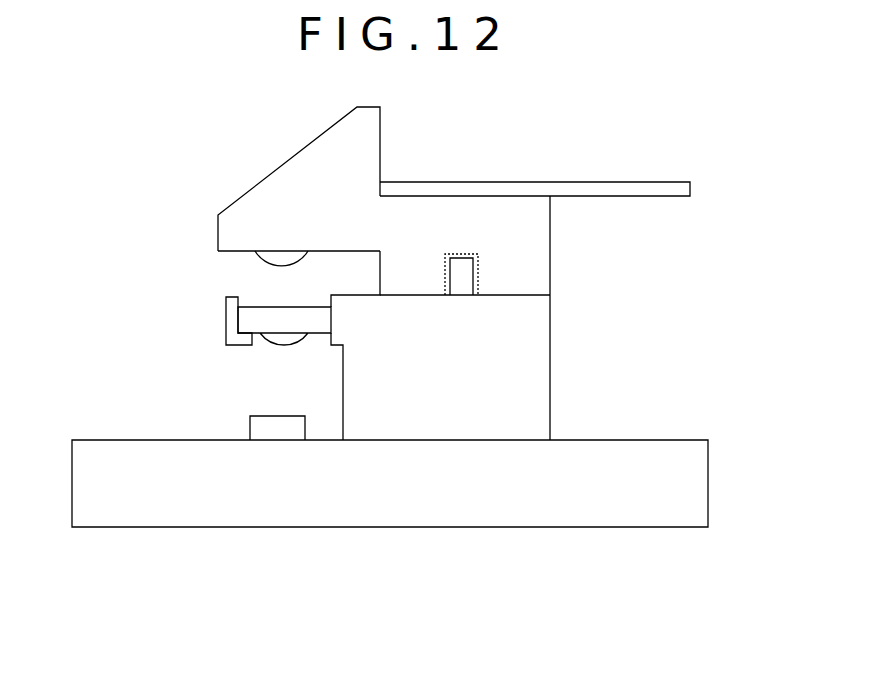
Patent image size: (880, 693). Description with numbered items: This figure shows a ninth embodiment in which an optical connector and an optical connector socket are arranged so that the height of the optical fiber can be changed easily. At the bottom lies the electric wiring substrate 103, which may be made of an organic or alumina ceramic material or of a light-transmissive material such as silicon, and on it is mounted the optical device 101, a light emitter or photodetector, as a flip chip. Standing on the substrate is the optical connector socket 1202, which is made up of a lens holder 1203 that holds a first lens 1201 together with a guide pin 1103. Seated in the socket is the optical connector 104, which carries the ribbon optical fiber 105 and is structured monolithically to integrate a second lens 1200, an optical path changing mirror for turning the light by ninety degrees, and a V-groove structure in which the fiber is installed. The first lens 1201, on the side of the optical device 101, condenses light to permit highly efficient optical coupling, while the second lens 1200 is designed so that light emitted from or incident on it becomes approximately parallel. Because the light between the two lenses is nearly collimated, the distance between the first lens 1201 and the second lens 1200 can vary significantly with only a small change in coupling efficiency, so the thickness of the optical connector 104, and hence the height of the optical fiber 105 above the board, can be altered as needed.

The optical connector 104 is at (338, 180).
The optical fiber 105 is at (510, 183).
The second lens 1200 is at (270, 252).
The first lens 1201 is at (272, 327).
The lens holder 1203 is at (222, 310).
The optical connector socket 1202 is at (490, 363).
The guide pin 1103 is at (463, 276).
The optical device 101 is at (277, 441).
The electric wiring substrate 103 is at (495, 497).